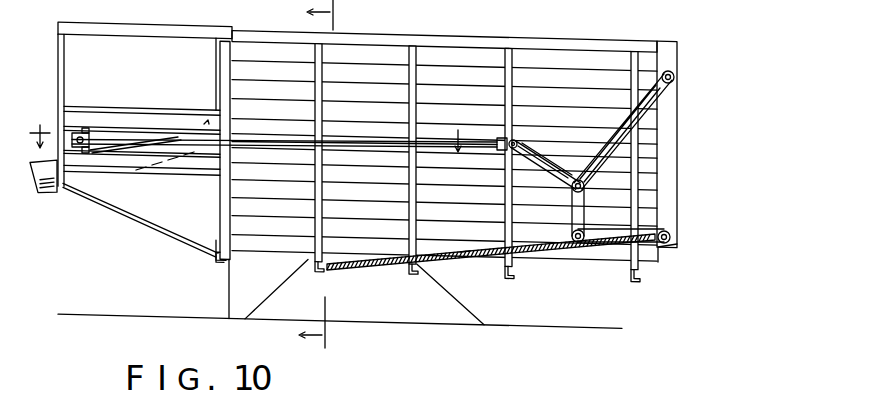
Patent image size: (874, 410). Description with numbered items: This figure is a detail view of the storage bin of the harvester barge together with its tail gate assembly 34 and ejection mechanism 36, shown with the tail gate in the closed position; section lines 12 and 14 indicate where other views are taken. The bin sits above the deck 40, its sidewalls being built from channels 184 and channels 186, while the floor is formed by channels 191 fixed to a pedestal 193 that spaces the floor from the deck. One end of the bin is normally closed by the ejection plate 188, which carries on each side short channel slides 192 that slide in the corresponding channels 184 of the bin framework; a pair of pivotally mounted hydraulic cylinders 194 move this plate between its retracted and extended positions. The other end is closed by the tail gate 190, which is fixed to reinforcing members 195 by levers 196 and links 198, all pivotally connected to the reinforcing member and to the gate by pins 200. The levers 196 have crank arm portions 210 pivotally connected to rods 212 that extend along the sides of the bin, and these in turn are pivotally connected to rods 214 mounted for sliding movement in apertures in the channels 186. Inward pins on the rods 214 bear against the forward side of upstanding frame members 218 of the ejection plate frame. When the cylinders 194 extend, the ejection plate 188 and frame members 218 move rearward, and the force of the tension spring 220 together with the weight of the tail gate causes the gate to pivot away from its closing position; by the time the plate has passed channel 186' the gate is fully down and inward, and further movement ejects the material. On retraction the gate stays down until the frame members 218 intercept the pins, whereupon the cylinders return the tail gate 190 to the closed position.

The section line 12 is at (244, 129).
The section line 14 is at (302, 174).
The tail gate assembly 34 is at (668, 265).
The ejection mechanism 36 is at (110, 201).
The deck 40 is at (152, 318).
The channels 184 is at (458, 85).
The channels 186 is at (444, 146).
The channel 186' is at (186, 258).
The ejection plate 188 is at (216, 50).
The tail gate 190 is at (672, 140).
The channels 191 is at (370, 270).
The short channel slides 192 is at (140, 120).
The pedestal 193 is at (230, 318).
The hydraulic cylinders 194 is at (48, 192).
The reinforcing members 195 is at (570, 198).
The levers 196 is at (614, 120).
The links 198 is at (603, 256).
The pins 200 is at (502, 140).
The crank arm portions 210 is at (545, 153).
The rods 212 is at (382, 150).
The rods 214 is at (293, 152).
The upstanding frame members 218 is at (85, 132).
The tension spring 220 is at (474, 258).